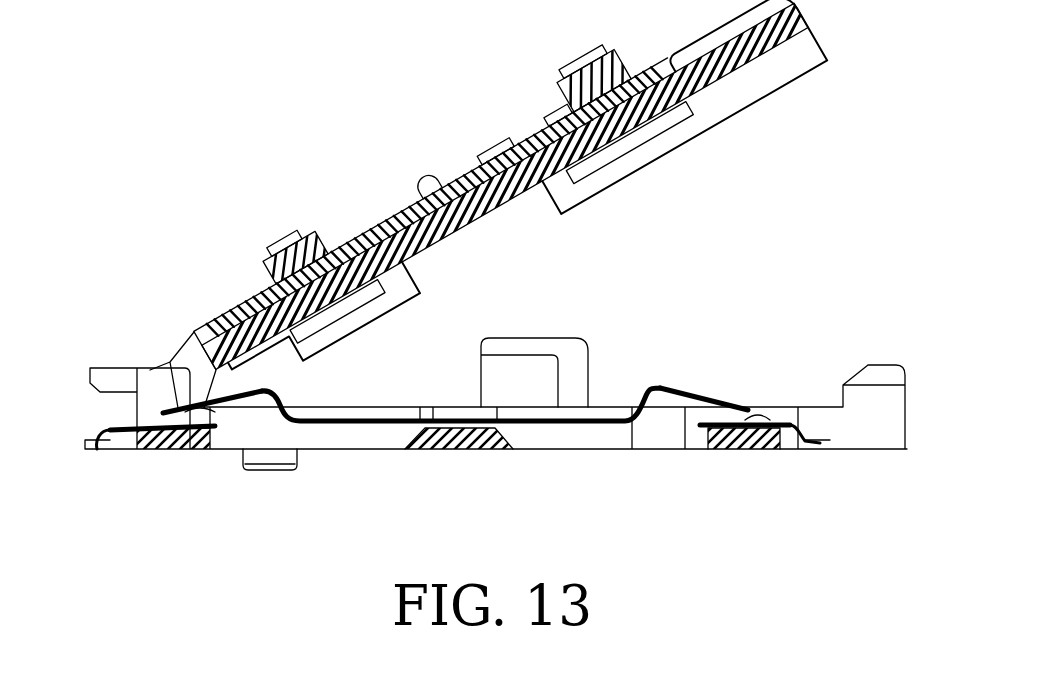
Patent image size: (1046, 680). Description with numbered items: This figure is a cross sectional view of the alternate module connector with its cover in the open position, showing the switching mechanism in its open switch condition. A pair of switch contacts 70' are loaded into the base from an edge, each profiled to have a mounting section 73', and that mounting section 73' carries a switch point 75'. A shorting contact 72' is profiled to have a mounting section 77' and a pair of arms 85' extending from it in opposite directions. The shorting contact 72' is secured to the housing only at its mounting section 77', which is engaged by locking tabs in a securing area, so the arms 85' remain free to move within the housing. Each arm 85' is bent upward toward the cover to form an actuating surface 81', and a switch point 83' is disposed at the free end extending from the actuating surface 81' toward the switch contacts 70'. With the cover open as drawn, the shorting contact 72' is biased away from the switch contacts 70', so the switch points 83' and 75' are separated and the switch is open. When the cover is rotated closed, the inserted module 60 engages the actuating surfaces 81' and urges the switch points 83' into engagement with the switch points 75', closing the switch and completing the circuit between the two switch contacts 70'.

The inserted module 60 is at (798, 22).
The shorting contact 72' is at (496, 395).
The mounting section 77' is at (518, 364).
The arms 85' is at (461, 364).
The actuating surface 81' is at (455, 355).
The switch point 83' is at (445, 365).
The switch point 75' is at (474, 350).
The mounting section 73' is at (471, 424).
The switch contacts 70' is at (436, 450).